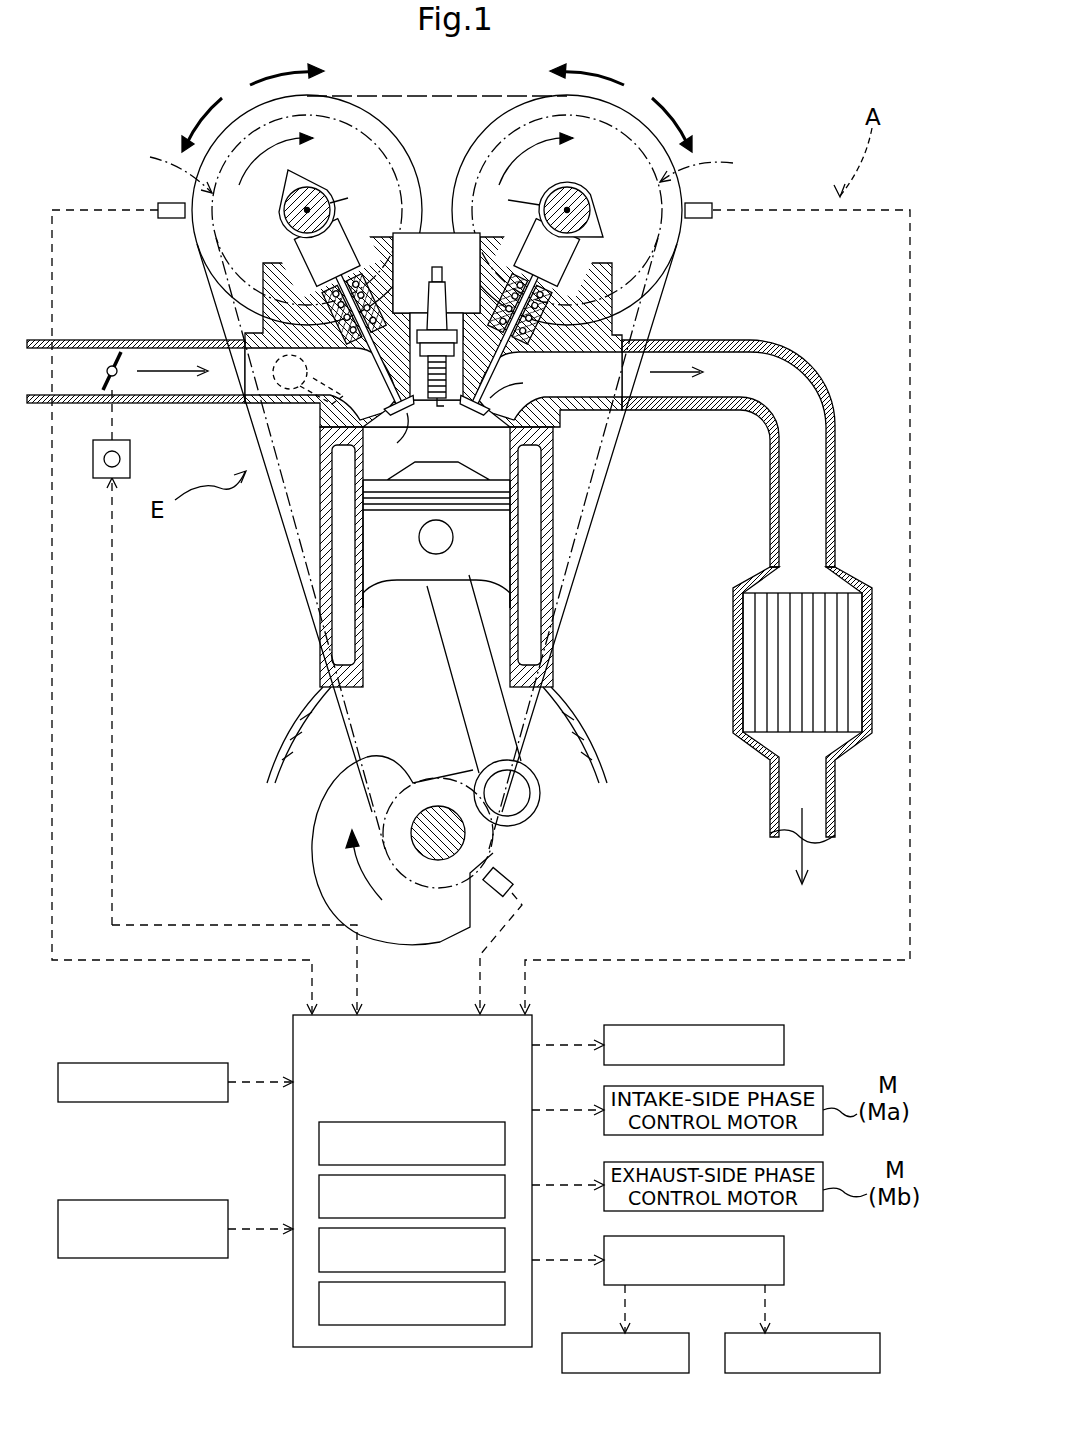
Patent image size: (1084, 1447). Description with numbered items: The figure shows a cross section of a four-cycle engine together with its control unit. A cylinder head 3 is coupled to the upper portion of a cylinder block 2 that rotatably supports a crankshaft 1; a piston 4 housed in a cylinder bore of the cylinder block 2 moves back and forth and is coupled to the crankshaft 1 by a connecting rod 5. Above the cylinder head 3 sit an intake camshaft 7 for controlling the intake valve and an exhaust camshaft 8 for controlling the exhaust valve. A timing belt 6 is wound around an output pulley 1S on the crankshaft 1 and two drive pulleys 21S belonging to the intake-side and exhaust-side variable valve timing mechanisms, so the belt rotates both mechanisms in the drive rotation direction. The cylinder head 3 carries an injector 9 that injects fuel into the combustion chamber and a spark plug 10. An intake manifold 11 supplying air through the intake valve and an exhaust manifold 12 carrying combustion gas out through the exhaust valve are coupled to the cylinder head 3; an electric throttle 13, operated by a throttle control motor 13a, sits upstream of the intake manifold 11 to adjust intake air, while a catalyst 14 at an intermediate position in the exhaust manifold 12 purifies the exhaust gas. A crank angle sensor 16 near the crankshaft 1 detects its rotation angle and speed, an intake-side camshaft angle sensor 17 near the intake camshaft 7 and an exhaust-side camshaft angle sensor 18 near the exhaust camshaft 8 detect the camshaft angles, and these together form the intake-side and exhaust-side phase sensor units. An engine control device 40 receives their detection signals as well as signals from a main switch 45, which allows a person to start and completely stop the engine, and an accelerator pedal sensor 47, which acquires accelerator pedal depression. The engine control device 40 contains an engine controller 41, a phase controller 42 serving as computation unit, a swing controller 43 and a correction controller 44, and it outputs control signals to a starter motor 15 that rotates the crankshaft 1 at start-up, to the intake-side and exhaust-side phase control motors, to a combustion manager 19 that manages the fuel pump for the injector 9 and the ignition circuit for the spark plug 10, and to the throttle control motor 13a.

The crankshaft 1 is at (438, 805).
The output pulley 1S is at (420, 845).
The cylinder block 2 is at (553, 577).
The cylinder head 3 is at (557, 413).
The piston 4 is at (500, 528).
The connecting rod 5 is at (447, 628).
The timing belt 6 is at (277, 533).
The intake camshaft 7 is at (283, 207).
The exhaust camshaft 8 is at (580, 200).
The injector 9 is at (304, 412).
The spark plug 10 is at (437, 263).
The intake manifold 11 is at (200, 337).
The exhaust manifold 12 is at (732, 338).
The electric throttle 13 is at (108, 350).
The throttle control motor 13a is at (130, 452).
The catalyst 14 is at (733, 662).
The starter motor 15 is at (784, 1045).
The crank angle sensor 16 is at (510, 873).
The intake-side camshaft angle sensor 17 is at (172, 218).
The exhaust-side camshaft angle sensor 18 is at (700, 218).
The combustion manager 19 is at (784, 1258).
The drive pulley 21S is at (250, 112).
The engine control device 40 is at (293, 1040).
The engine controller 41 is at (319, 1135).
The phase controller 42 is at (319, 1186).
The swing controller 43 is at (319, 1258).
The correction controller 44 is at (319, 1300).
The main switch 45 is at (58, 1080).
The accelerator pedal sensor 47 is at (58, 1242).